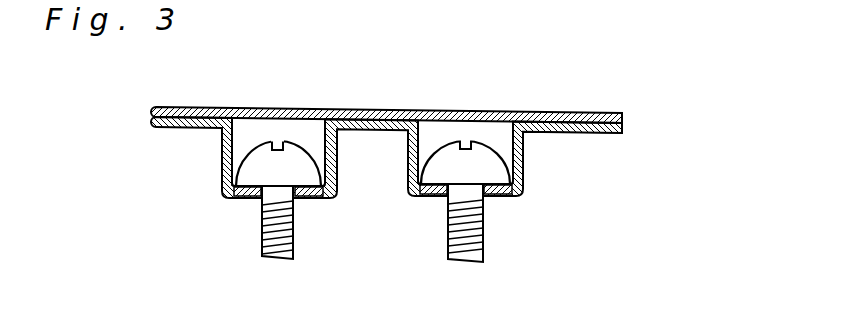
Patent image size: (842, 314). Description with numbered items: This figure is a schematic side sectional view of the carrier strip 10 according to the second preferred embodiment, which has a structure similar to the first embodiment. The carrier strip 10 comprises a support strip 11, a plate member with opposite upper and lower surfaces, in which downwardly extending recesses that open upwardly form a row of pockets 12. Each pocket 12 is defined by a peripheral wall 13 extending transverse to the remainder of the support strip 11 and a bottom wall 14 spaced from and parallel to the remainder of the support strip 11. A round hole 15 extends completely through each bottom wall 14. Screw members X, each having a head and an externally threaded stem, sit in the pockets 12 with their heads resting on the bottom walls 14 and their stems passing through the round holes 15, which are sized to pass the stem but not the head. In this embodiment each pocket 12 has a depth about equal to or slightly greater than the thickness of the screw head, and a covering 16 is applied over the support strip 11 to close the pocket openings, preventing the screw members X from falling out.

The carrier strip 10 is at (586, 100).
The support strip 11 is at (565, 131).
The pocket 12 is at (305, 137).
The peripheral wall 13 is at (222, 168).
The bottom wall 14 is at (238, 200).
The round hole 15 is at (298, 199).
The covering 16 is at (508, 118).
The screw member X is at (270, 148).